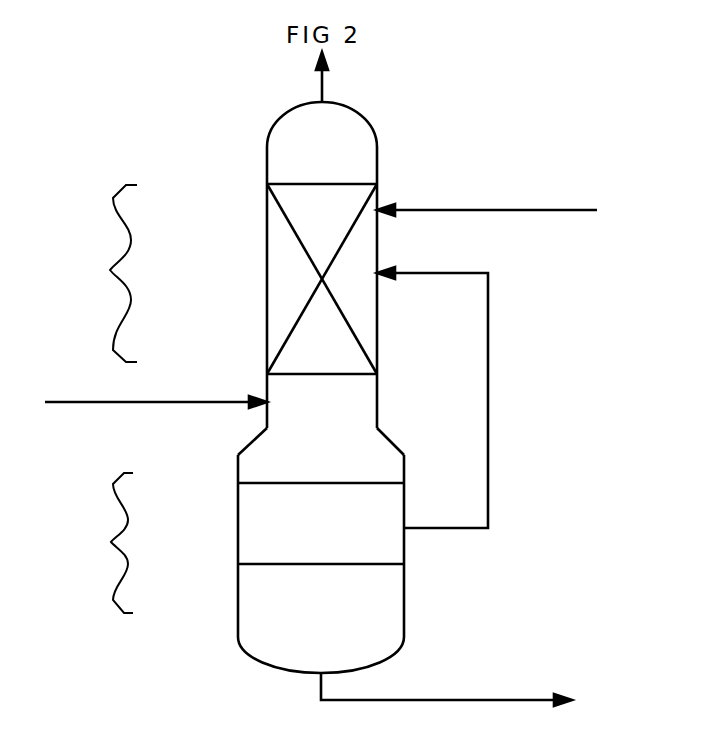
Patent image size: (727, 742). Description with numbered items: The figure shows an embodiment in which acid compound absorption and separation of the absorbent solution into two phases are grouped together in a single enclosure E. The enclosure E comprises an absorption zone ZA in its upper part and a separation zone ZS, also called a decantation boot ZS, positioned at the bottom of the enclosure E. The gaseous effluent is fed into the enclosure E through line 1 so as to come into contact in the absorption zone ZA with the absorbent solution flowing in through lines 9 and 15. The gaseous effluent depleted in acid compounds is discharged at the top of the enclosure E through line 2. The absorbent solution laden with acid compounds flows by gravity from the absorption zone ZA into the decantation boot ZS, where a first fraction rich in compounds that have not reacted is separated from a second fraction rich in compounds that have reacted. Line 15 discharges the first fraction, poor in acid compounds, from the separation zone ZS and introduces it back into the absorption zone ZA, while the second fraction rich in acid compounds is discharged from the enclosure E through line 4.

The enclosure E is at (277, 123).
The line 1 is at (65, 400).
The line 2 is at (322, 73).
The line 4 is at (492, 700).
The line 9 is at (499, 210).
The line 15 is at (488, 347).
The absorption zone ZA is at (97, 273).
The separation zone ZS is at (97, 543).